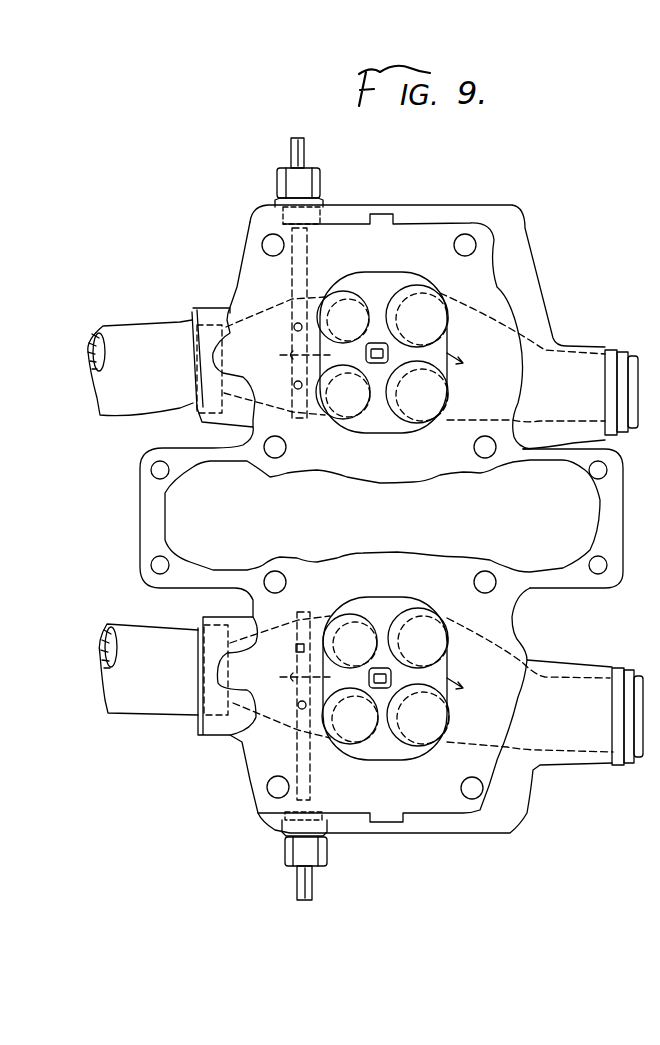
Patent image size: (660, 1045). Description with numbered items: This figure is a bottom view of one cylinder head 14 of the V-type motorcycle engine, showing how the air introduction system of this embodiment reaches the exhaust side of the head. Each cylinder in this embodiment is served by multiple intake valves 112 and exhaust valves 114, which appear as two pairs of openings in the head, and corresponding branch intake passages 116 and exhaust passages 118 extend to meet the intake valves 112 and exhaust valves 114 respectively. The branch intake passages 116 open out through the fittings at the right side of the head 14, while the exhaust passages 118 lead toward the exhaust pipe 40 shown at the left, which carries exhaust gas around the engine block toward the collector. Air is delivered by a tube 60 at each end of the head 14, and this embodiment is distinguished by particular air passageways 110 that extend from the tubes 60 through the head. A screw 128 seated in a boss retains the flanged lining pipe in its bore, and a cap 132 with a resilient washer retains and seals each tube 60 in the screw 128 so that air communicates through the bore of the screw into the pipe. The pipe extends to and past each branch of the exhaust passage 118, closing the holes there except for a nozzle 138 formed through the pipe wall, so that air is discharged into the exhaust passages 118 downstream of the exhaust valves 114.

The cylinder head 14 is at (527, 232).
The exhaust pipe 40 is at (147, 410).
The tube 60 is at (305, 150).
The air passageway 110 is at (308, 242).
The intake valve 112 is at (422, 290).
The exhaust valve 114 is at (331, 295).
The branch intake passage 116 is at (584, 350).
The exhaust passage 118 is at (230, 312).
The screw 128 is at (277, 203).
The cap 132 is at (282, 178).
The nozzle 138 is at (294, 329).